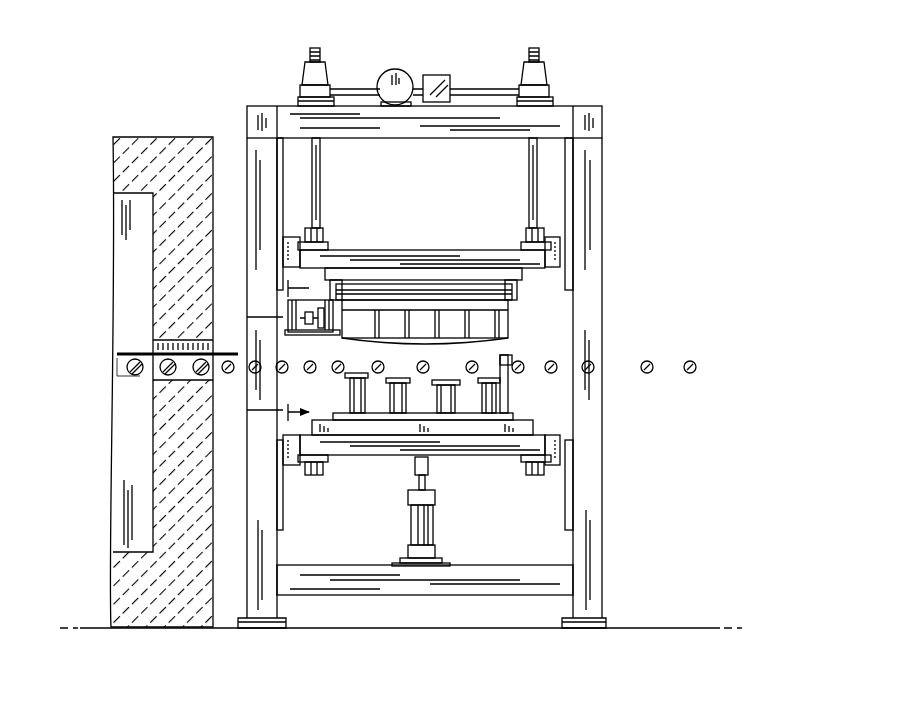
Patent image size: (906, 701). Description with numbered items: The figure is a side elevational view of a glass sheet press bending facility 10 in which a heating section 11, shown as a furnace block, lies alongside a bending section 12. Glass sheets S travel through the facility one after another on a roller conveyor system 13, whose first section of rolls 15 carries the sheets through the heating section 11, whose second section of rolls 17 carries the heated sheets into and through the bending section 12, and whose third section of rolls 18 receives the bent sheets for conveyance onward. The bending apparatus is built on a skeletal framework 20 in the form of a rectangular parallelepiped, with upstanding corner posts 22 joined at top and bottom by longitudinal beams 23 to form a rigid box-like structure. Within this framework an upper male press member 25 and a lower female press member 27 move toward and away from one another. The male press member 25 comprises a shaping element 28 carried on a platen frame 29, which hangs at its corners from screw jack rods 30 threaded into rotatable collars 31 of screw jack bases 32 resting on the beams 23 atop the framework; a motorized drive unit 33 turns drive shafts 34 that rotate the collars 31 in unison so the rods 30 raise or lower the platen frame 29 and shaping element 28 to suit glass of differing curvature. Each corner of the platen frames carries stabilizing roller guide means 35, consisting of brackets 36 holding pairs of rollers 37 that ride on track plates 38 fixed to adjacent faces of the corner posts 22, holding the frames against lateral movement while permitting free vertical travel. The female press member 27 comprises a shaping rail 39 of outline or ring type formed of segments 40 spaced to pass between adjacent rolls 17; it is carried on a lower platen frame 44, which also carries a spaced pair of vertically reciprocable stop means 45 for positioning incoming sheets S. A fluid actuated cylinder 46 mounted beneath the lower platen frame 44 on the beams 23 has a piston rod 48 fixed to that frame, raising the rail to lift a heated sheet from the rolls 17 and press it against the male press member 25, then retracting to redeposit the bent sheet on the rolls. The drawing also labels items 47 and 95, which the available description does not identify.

The glass sheet press bending facility 10 is at (455, 355).
The heating section 11 is at (146, 133).
The bending section 12 is at (607, 121).
The roller conveyor system 13 is at (118, 375).
The rolls 15 is at (135, 380).
The rolls 17 is at (229, 374).
The rolls 18 is at (650, 375).
The skeletal framework 20 is at (469, 322).
The corner posts 22 is at (268, 610).
The longitudinal beams 23 is at (456, 140).
The upper male press member 25 is at (523, 300).
The lower female press member 27 is at (346, 397).
The shaping element 28 is at (514, 334).
The platen frame 29 is at (413, 262).
The screw jack rods 30 is at (322, 170).
The rotatable collars 31 is at (307, 72).
The screw jack bases 32 is at (300, 92).
The motorized drive unit 33 is at (442, 64).
The drive shafts 34 is at (358, 88).
The stabilizing roller guide means 35 is at (313, 232).
The brackets 36 is at (321, 246).
The rollers 37 is at (288, 254).
The track plates 38 is at (283, 162).
The shaping rail 39 is at (360, 373).
The segments 40 is at (405, 373).
The lower platen frame 44 is at (468, 456).
The stop means 45 is at (511, 364).
The fluid actuated cylinder 46 is at (433, 532).
The cylinder base 47 is at (403, 560).
The piston rod 48 is at (415, 480).
The side assembly 95 is at (281, 317).
The glass sheets S is at (147, 352).